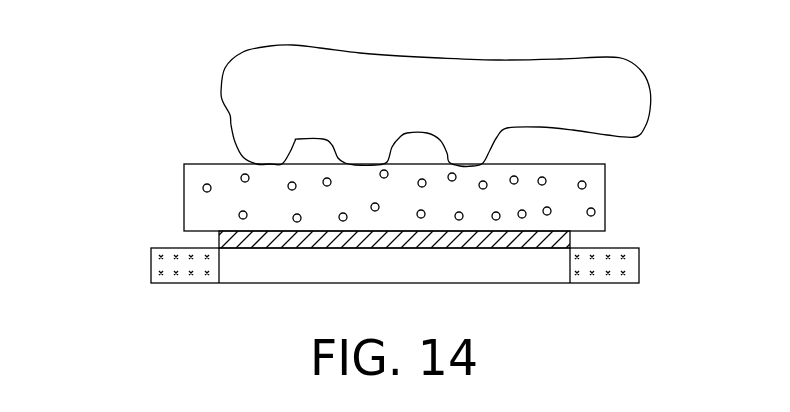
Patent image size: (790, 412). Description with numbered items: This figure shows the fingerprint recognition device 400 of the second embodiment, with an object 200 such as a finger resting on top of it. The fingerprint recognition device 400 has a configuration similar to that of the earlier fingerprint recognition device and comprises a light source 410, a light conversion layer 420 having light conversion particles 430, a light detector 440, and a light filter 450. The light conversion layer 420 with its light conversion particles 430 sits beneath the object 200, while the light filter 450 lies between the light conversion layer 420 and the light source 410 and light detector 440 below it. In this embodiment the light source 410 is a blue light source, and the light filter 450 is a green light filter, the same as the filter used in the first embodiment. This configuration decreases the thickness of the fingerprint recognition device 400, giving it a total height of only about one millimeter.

The object 200 is at (638, 95).
The fingerprint recognition device 400 is at (100, 183).
The light source 410 is at (390, 265).
The light conversion layer 420 is at (409, 197).
The light conversion particles 430 is at (595, 211).
The light detector 440 is at (563, 260).
The light filter 450 is at (566, 243).